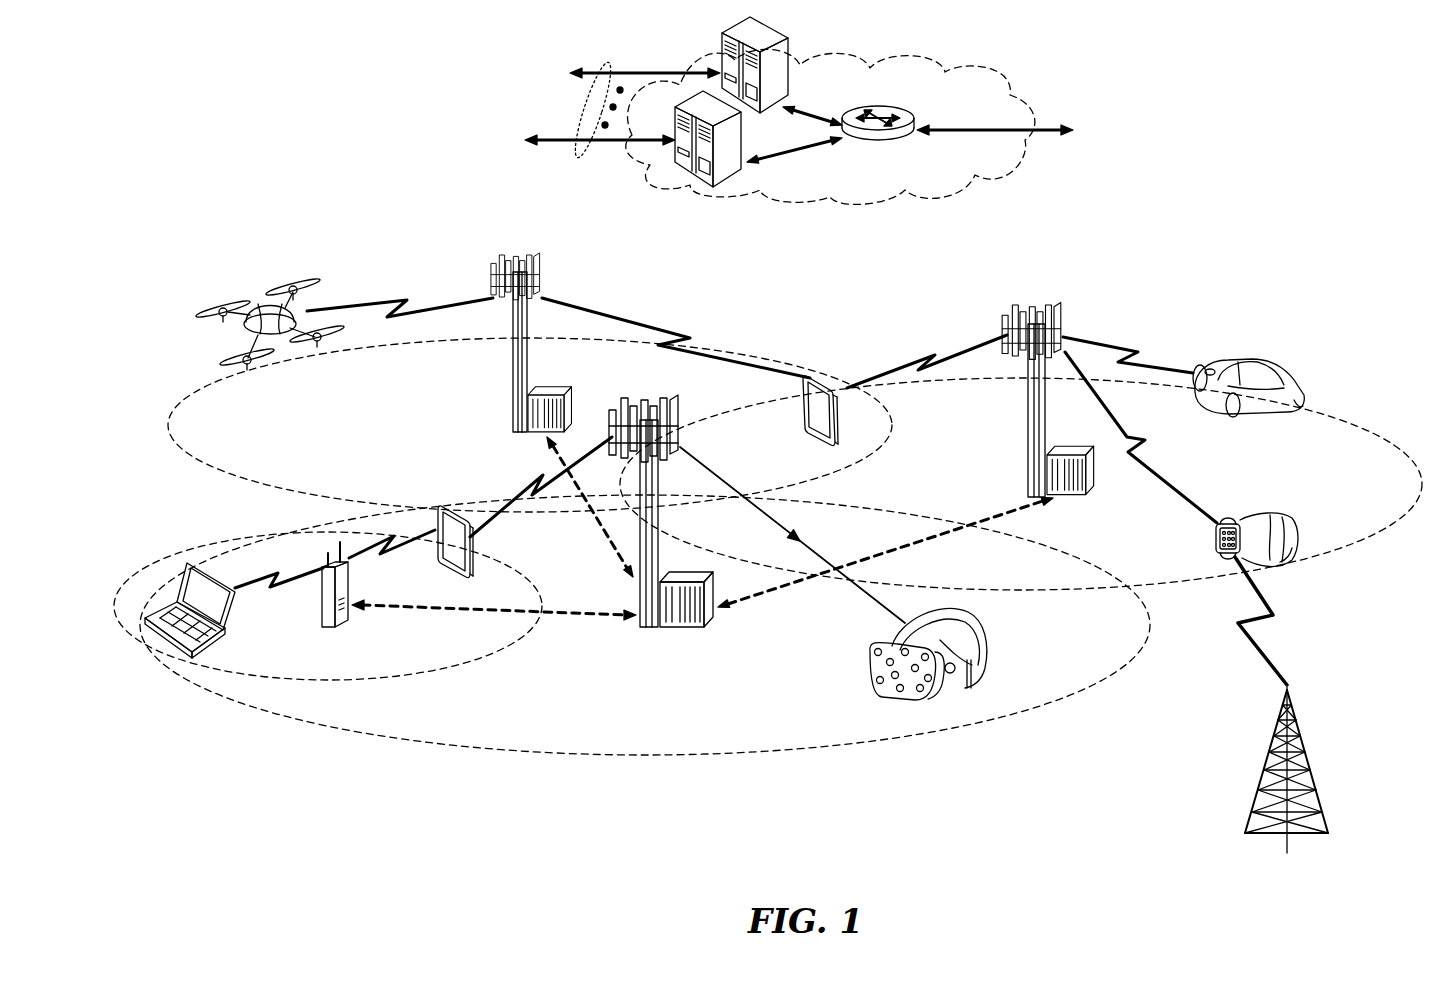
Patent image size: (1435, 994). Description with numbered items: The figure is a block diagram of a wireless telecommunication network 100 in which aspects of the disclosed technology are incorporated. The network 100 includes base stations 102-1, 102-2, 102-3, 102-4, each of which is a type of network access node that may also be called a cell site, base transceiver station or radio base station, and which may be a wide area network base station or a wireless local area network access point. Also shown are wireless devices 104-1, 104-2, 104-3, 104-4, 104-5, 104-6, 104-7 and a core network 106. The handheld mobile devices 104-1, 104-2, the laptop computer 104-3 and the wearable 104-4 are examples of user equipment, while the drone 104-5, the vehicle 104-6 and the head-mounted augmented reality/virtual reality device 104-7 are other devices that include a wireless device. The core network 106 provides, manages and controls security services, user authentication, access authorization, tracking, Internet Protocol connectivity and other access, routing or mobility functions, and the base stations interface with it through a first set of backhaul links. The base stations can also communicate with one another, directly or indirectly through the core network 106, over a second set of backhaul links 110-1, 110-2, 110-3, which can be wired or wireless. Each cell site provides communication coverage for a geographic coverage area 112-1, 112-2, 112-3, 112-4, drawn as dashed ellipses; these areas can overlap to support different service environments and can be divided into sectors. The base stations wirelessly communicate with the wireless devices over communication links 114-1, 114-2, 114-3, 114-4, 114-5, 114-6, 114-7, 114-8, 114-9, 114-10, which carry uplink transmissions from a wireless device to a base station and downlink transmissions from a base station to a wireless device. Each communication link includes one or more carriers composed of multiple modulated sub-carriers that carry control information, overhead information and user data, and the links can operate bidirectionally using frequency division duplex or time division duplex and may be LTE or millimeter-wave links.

The wireless telecommunication network 100 is at (1322, 117).
The base station 102-1 is at (650, 627).
The base station 102-2 is at (510, 380).
The base station 102-3 is at (1028, 413).
The base station 102-4 is at (317, 617).
The wireless device 104-1 is at (473, 553).
The wireless device 104-2 is at (802, 412).
The wireless device 104-3 is at (170, 652).
The wireless device 104-4 is at (1232, 520).
The wireless device 104-5 is at (280, 348).
The wireless device 104-6 is at (1270, 370).
The wireless device 104-7 is at (983, 640).
The core network 106 is at (890, 197).
The backhaul link 110-1 is at (388, 618).
The backhaul link 110-2 is at (977, 528).
The backhaul link 110-3 is at (605, 533).
The coverage area 112-1 is at (575, 755).
The coverage area 112-2 is at (454, 667).
The coverage area 112-3 is at (232, 486).
The coverage area 112-4 is at (1323, 413).
The communication link 114-1 is at (803, 537).
The communication link 114-2 is at (537, 476).
The communication link 114-3 is at (250, 587).
The communication link 114-4 is at (388, 554).
The communication link 114-5 is at (397, 298).
The communication link 114-6 is at (680, 332).
The communication link 114-7 is at (927, 355).
The communication link 114-8 is at (1157, 453).
The communication link 114-9 is at (1122, 345).
The communication link 114-10 is at (1273, 623).